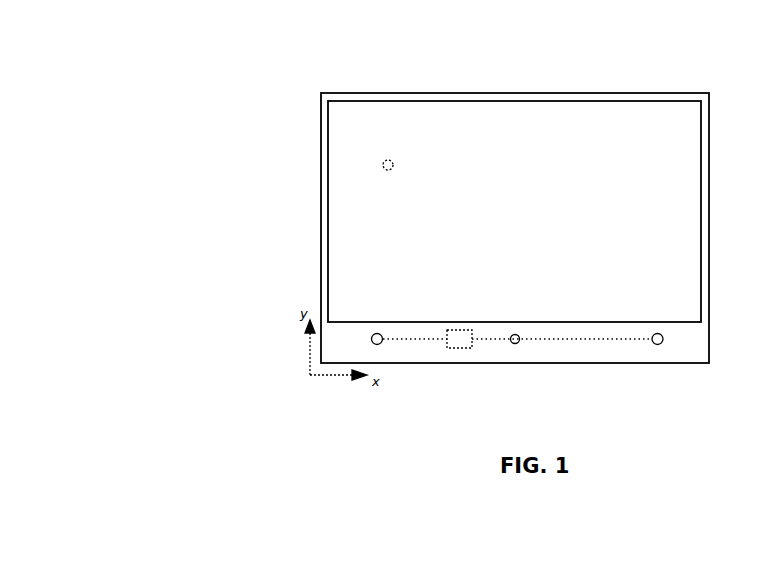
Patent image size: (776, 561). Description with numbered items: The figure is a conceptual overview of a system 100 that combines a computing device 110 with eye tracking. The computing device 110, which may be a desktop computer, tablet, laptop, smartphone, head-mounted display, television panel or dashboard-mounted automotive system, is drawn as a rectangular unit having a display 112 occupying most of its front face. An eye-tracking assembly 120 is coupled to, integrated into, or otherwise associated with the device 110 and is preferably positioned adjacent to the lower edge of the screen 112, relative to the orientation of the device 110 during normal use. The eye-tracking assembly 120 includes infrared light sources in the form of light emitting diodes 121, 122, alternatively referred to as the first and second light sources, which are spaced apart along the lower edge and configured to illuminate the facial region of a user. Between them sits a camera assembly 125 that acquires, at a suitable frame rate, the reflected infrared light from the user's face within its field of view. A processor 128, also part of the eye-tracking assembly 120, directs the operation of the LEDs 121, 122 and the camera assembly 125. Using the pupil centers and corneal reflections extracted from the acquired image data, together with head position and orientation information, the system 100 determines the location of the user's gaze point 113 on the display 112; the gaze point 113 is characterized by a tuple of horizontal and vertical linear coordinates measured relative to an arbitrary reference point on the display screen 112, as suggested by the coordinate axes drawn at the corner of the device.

The system 100 is at (270, 85).
The computing device 110 is at (320, 233).
The display 112 is at (683, 167).
The gaze point 113 is at (394, 164).
The eye-tracking assembly 120 is at (594, 365).
The light emitting diode 121 is at (381, 331).
The light emitting diode 122 is at (655, 331).
The camera assembly 125 is at (516, 333).
The processor 128 is at (452, 346).